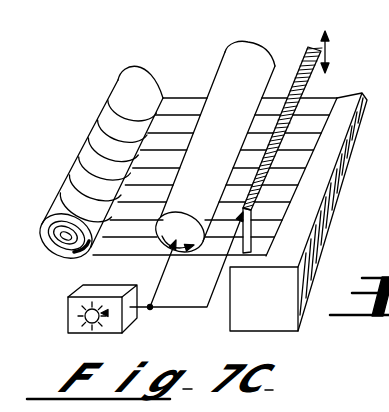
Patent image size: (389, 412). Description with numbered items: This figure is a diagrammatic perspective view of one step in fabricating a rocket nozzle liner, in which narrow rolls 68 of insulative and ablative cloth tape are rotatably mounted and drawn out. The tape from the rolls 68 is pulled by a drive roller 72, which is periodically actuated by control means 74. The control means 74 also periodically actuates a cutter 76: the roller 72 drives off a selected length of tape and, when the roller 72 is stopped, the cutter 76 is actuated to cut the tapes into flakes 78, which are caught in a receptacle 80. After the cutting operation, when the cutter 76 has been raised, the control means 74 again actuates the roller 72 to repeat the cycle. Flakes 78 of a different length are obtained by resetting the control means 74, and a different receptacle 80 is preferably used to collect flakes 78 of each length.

The rolls of tape 68 is at (105, 115).
The drive roller 72 is at (221, 60).
The control means 74 is at (128, 327).
The cutter 76 is at (308, 46).
The flakes 78 is at (309, 190).
The receptacle 80 is at (337, 233).